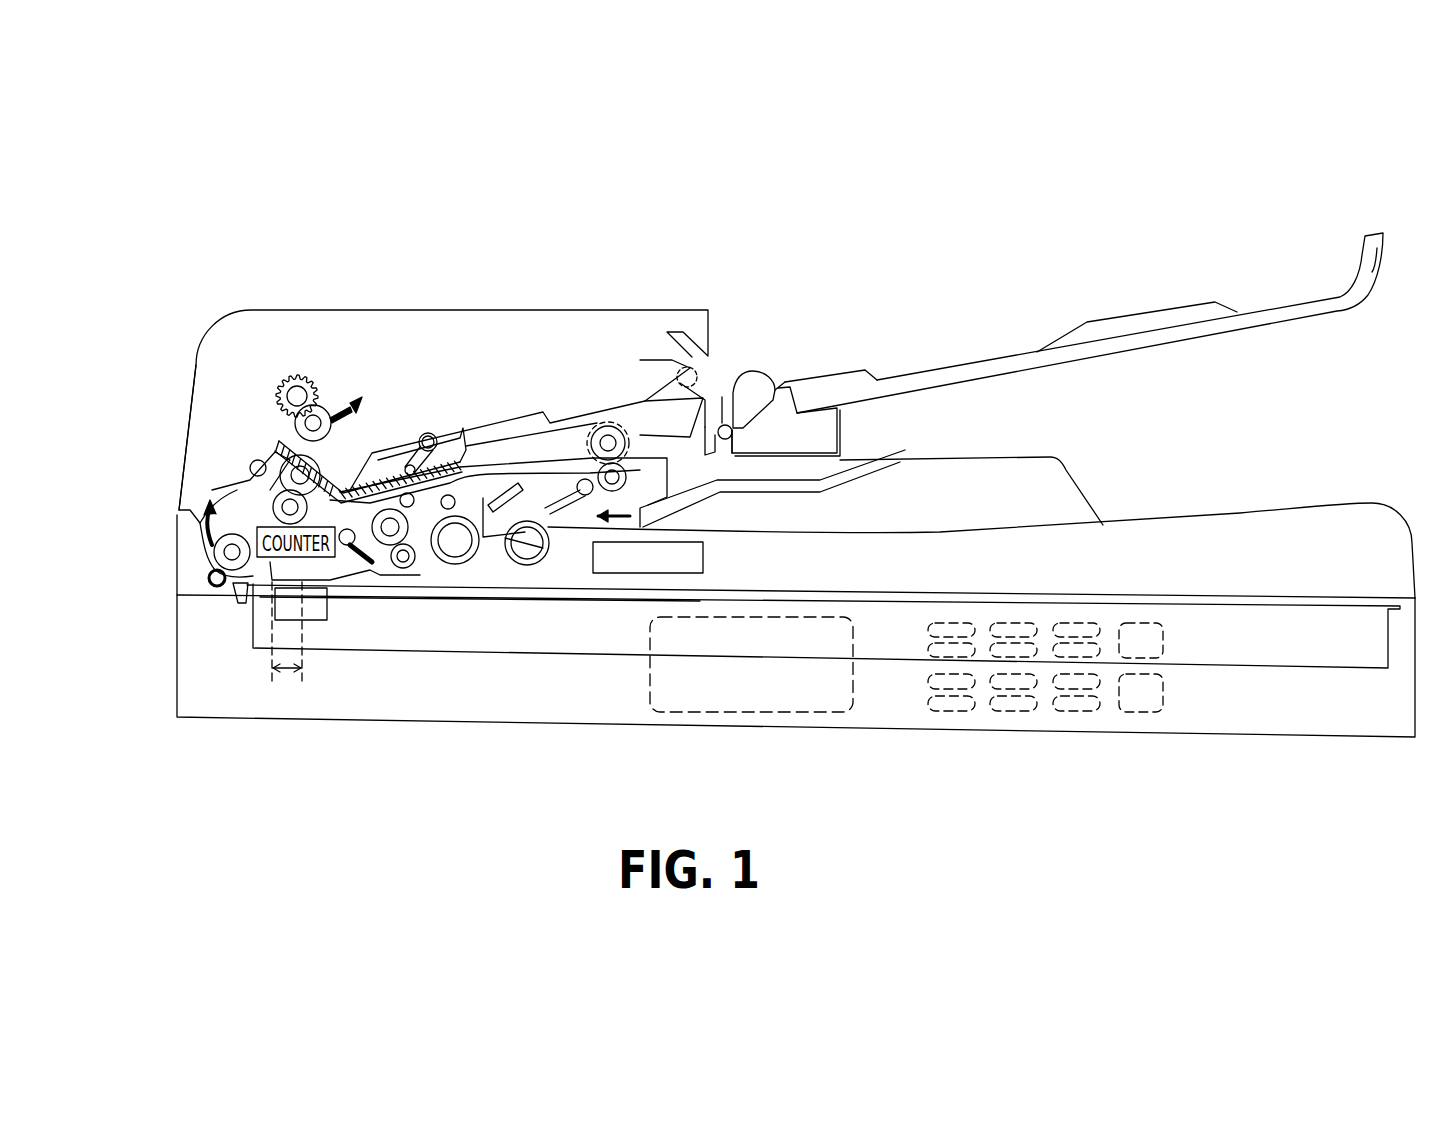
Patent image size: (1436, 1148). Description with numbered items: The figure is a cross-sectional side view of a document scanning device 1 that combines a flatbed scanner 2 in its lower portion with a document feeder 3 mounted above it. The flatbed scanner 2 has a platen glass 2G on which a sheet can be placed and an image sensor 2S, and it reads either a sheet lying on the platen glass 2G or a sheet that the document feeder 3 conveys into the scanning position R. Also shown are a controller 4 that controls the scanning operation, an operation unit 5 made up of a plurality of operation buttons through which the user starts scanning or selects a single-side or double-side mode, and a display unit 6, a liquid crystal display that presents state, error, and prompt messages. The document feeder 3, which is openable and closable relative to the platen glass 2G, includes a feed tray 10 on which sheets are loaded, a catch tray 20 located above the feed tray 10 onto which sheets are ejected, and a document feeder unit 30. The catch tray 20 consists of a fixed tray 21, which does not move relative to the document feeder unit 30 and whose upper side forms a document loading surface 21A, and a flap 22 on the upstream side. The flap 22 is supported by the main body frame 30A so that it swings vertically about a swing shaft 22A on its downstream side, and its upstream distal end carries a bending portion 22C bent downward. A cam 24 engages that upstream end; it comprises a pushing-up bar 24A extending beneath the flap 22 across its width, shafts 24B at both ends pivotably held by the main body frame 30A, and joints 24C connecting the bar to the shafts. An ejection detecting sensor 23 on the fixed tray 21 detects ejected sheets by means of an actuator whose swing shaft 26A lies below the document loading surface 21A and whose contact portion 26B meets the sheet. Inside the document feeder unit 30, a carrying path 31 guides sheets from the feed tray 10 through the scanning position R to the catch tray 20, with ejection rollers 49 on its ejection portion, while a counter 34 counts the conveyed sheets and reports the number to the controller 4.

The document scanning device 1 is at (862, 176).
The flatbed scanner 2 is at (172, 652).
The image sensor 2S is at (329, 606).
The platen glass 2G is at (548, 597).
The scanning position R is at (287, 683).
The document feeder 3 is at (522, 232).
The controller 4 is at (703, 556).
The operation unit 5 is at (1180, 708).
The display unit 6 is at (783, 692).
The feed tray 10 is at (1248, 512).
The catch tray 20 is at (1152, 275).
The fixed tray 21 is at (880, 345).
The document loading surface 21A is at (792, 380).
The flap 22 is at (568, 418).
The swing shaft 22A is at (677, 374).
The bending portion 22C is at (370, 445).
The ejection detecting sensor 23 is at (773, 371).
The cam 24 is at (428, 425).
The pushing-up bar 24A is at (408, 464).
The shaft 24B is at (433, 435).
The joint 24C is at (461, 432).
The swing shaft 26A is at (725, 424).
The contact portion 26B is at (756, 378).
The document feeder unit 30 is at (412, 296).
The main body frame 30A is at (192, 377).
The carrying path 31 is at (198, 558).
The counter 34 is at (207, 492).
The ejection rollers 49 is at (300, 427).